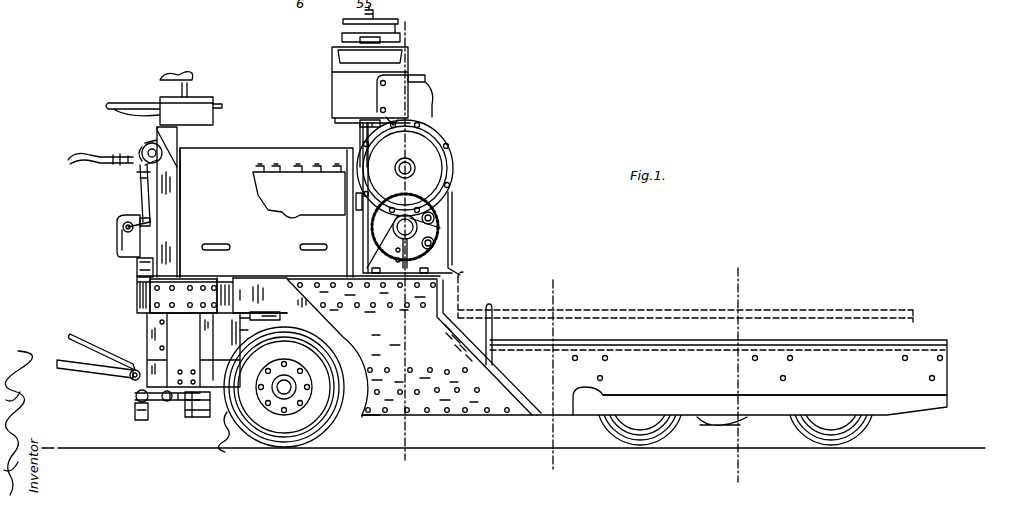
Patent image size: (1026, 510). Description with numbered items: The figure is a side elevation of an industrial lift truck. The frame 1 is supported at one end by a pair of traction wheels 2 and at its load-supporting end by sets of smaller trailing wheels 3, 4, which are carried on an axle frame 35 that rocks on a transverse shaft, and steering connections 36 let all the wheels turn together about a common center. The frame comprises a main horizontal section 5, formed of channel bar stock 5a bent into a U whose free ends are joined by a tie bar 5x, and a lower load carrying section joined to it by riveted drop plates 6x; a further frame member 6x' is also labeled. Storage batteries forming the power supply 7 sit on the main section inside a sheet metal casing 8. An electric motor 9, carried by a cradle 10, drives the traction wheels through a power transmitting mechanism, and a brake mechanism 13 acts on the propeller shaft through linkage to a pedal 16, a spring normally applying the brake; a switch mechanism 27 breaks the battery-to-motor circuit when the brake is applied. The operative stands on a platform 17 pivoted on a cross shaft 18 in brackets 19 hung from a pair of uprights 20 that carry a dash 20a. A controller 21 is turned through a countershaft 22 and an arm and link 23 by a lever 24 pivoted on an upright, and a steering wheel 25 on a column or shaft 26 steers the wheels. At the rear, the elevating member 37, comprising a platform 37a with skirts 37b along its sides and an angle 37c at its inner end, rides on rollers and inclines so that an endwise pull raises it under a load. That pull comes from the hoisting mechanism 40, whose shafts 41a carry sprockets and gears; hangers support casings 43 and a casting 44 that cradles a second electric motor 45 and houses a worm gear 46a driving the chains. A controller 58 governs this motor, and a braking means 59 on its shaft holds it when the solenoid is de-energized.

The frame 1 is at (265, 277).
The traction wheels 2 is at (540, 295).
The trailing wheels 3 is at (398, 22).
The trailing wheels 4 is at (725, 285).
The main horizontal section 5 is at (248, 278).
The channel bar stock 5a is at (137, 272).
The tie bar 5x is at (455, 270).
The drop plates 6x is at (277, 285).
The frame lower member 6x' is at (373, 428).
The power supply 7 is at (270, 200).
The sheet metal casing 8 is at (284, 148).
The electric motor 9 is at (218, 325).
The cradle 10 is at (206, 418).
The brake mechanism 13 is at (350, 352).
The pedal 16 is at (72, 337).
The platform 17 is at (72, 370).
The cross shaft 18 is at (128, 383).
The brackets 19 is at (136, 400).
The uprights 20 is at (170, 205).
The dash 20a is at (182, 194).
The controller 21 is at (120, 252).
The countershaft 22 is at (117, 235).
The arm and link 23 is at (140, 188).
The lever 24 is at (100, 162).
The steering wheel 25 is at (130, 103).
The column or shaft 26 is at (155, 133).
The switch mechanism 27 is at (123, 225).
The axle frame 35 is at (722, 418).
The steering connections 36 is at (224, 440).
The elevating member 37 is at (732, 377).
The platform 37a is at (915, 338).
The skirts 37b is at (950, 391).
The angle 37c is at (490, 322).
The hoisting mechanism 40 is at (453, 190).
The shafts 41a is at (420, 226).
The casings 43 is at (450, 146).
The casting 44 is at (432, 98).
The electric motor 45 is at (332, 104).
The worm gear 46a is at (360, 160).
The controller 58 is at (213, 115).
The braking means 59 is at (342, 28).